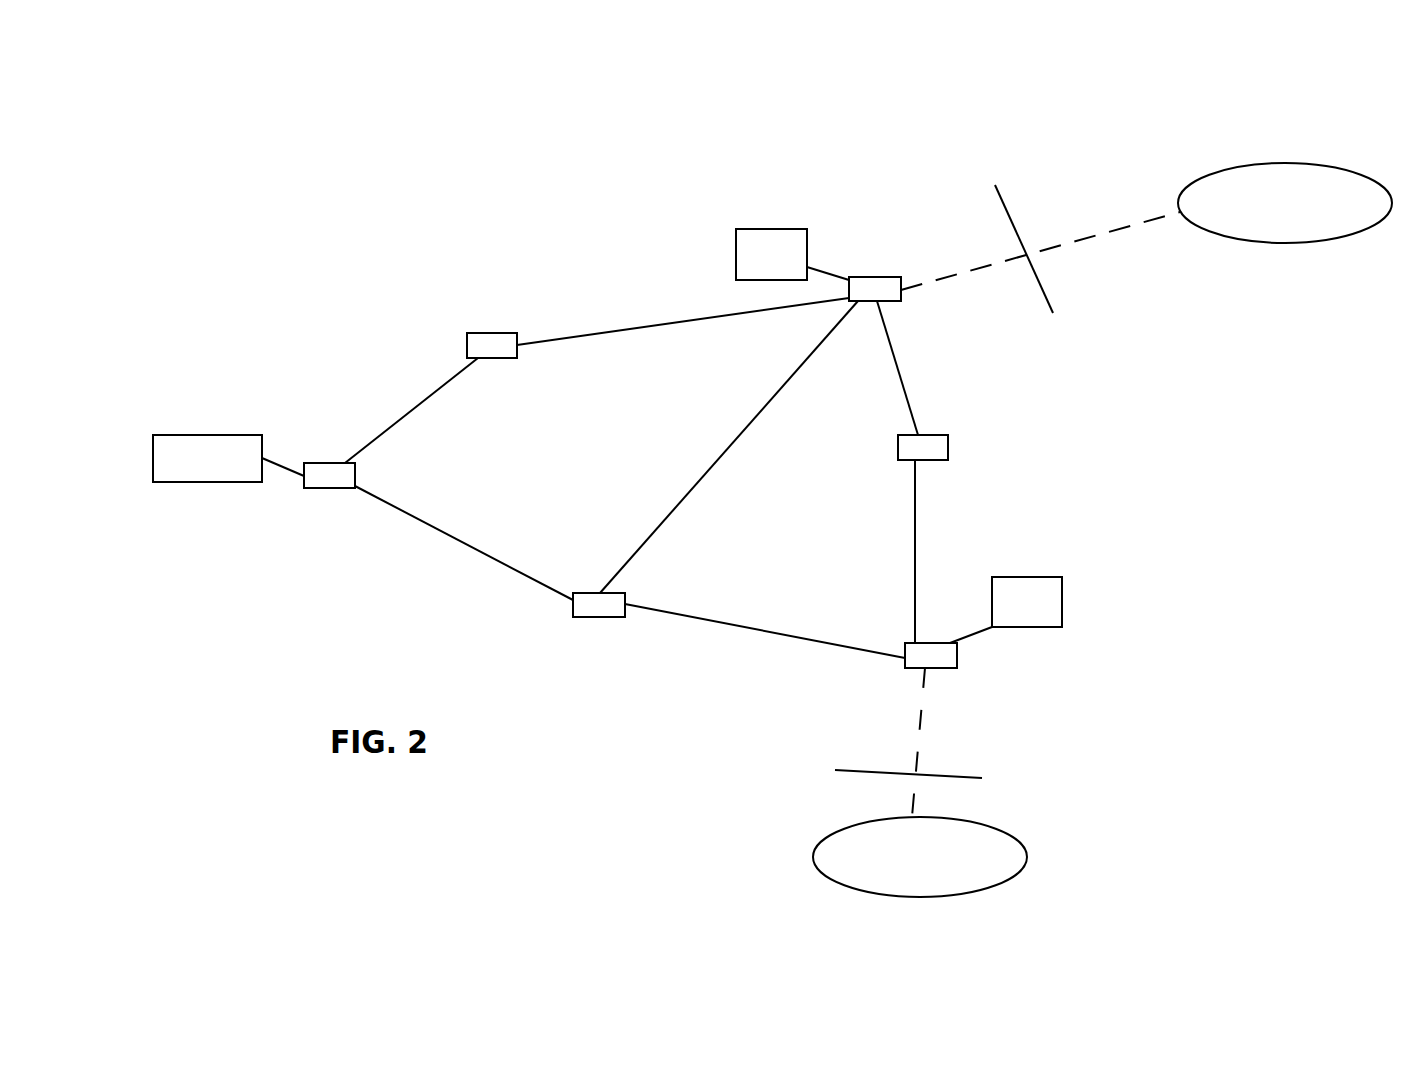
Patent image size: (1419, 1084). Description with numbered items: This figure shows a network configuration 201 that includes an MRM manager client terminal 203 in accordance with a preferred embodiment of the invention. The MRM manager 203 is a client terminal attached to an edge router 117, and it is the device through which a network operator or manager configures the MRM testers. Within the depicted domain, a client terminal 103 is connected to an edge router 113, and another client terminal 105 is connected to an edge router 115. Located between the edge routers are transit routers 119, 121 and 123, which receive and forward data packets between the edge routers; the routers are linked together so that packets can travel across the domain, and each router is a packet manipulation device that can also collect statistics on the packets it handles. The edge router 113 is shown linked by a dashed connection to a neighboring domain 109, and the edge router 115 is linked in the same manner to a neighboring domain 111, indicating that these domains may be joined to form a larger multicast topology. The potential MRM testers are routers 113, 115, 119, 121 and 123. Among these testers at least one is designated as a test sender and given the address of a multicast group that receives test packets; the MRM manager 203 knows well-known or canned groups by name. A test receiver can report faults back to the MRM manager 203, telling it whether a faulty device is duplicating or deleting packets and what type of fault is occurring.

The client terminal 103 is at (808, 232).
The client terminal 105 is at (1062, 581).
The neighboring domain 109 is at (1256, 241).
The neighboring domain 111 is at (813, 857).
The edge router 113 is at (903, 299).
The edge router 115 is at (957, 662).
The edge router 117 is at (320, 488).
The transit router 119 is at (493, 358).
The transit router 121 is at (600, 617).
The transit router 123 is at (948, 452).
The network configuration 201 is at (373, 296).
The MRM manager client terminal 203 is at (153, 476).